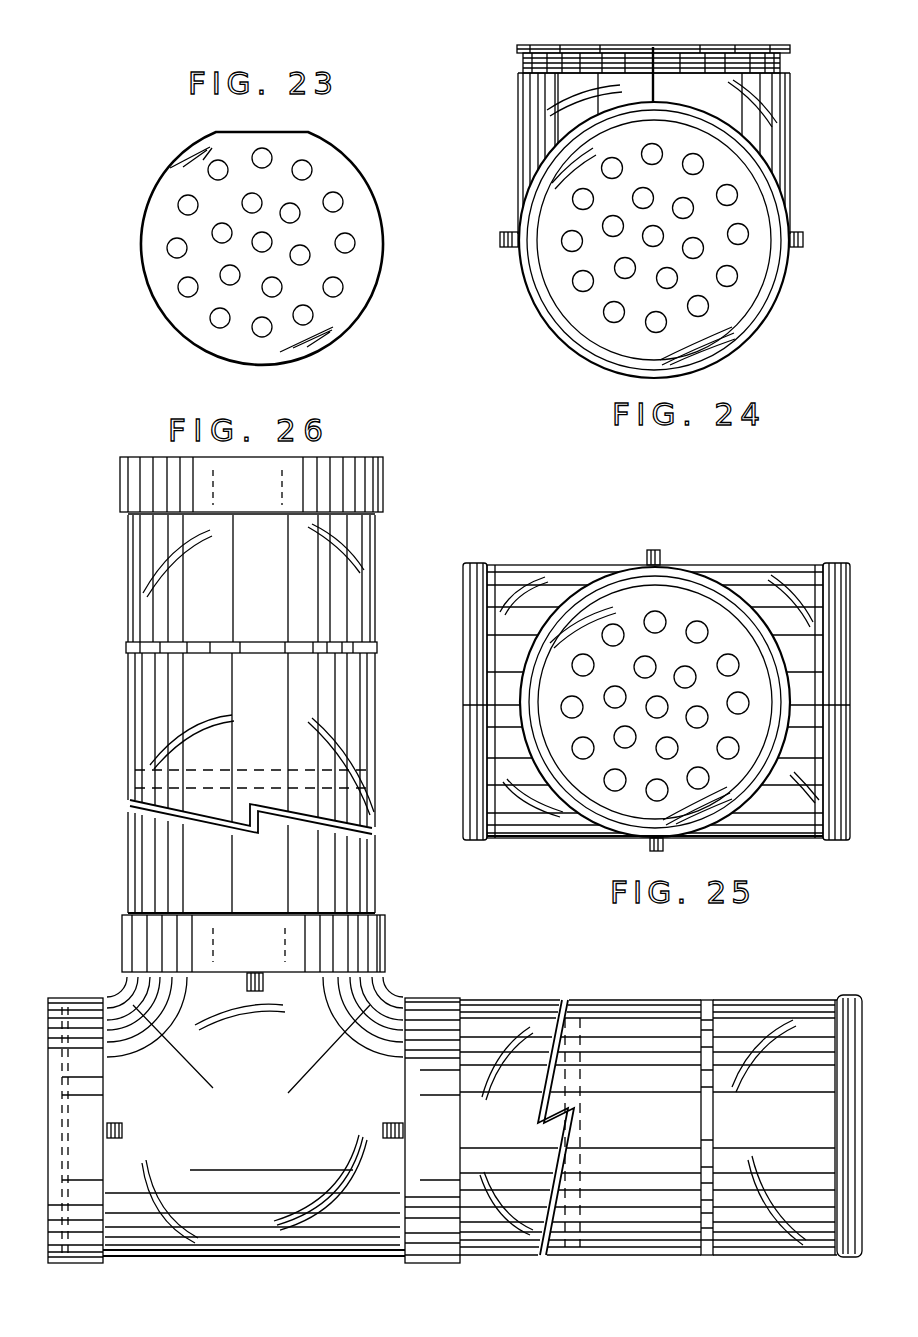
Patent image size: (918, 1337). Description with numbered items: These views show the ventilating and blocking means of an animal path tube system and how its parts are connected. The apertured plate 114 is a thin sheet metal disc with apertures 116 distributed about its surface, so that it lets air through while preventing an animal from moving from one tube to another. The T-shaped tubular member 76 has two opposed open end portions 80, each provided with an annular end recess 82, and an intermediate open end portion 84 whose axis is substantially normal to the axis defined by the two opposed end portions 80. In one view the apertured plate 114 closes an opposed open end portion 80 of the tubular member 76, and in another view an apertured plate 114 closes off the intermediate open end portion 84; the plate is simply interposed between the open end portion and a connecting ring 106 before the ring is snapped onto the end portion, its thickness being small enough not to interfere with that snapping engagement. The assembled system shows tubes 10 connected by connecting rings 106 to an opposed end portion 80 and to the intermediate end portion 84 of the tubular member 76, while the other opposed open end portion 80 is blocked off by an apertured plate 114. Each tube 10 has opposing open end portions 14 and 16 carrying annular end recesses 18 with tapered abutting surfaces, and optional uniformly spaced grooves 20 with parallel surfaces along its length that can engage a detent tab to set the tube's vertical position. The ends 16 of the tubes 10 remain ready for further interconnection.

In FIG. 26, the tube 10 is at (147, 728).
In FIG. 26, the open end portion 14 is at (355, 877).
In FIG. 26, the open end portion 16 is at (355, 538).
In FIG. 26, the annular end recess 18 is at (843, 1000).
In FIG. 26, the groove 20 is at (137, 647).
In FIG. 24, the tubular member 76 is at (708, 32).
In FIG. 26, the tubular member 76 is at (235, 1222).
In FIG. 24, the opposed open end portion 80 is at (792, 343).
In FIG. 25, the opposed open end portion 80 is at (512, 536).
In FIG. 26, the opposed open end portion 80 is at (128, 1240).
In FIG. 24, the annular end recess 82 is at (783, 65).
In FIG. 25, the annular end recess 82 is at (483, 575).
In FIG. 24, the intermediate open end portion 84 is at (493, 106).
In FIG. 25, the intermediate open end portion 84 is at (589, 532).
In FIG. 26, the connecting ring 106 is at (138, 480).
In FIG. 23, the apertured plate 114 is at (160, 213).
In FIG. 24, the apertured plate 114 is at (557, 268).
In FIG. 25, the apertured plate 114 is at (683, 608).
In FIG. 26, the apertured plate 114 is at (63, 1207).
In FIG. 23, the apertures 116 is at (337, 198).
In FIG. 24, the apertures 116 is at (615, 315).
In FIG. 25, the apertures 116 is at (614, 781).